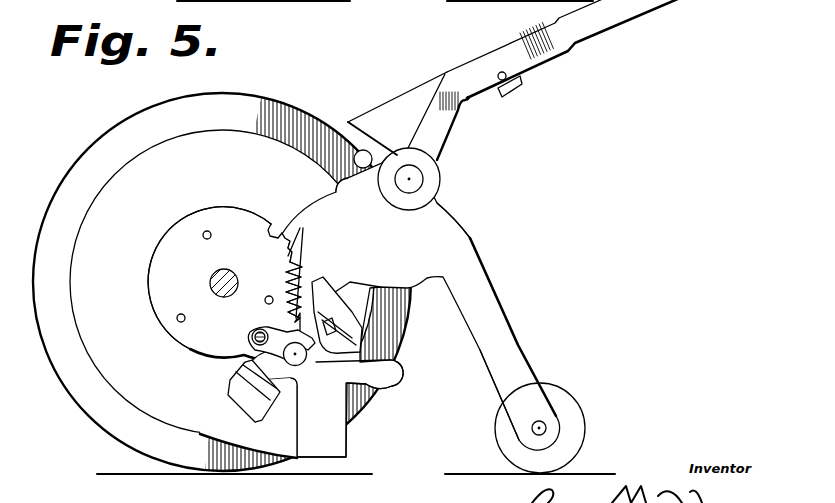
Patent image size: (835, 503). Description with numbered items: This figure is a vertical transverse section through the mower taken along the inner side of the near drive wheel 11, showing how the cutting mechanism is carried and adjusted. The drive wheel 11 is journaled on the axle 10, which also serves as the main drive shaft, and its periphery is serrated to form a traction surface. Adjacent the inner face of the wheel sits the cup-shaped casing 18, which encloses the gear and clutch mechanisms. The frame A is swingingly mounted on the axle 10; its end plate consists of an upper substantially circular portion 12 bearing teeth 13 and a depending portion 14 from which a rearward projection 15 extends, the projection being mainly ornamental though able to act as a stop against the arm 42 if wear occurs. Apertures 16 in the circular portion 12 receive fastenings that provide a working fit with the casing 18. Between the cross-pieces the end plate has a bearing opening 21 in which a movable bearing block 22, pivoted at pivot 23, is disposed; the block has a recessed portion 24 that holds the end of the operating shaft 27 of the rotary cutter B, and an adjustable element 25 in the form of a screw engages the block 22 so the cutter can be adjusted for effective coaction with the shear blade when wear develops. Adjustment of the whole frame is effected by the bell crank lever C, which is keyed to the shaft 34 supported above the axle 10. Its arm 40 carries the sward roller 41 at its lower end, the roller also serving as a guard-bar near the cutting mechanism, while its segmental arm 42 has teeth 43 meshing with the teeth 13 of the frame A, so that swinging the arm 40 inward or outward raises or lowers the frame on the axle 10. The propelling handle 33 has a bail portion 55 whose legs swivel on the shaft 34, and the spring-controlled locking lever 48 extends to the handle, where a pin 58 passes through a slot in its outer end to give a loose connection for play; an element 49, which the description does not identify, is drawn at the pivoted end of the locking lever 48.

The axle 10 is at (229, 275).
The drive wheel 11 is at (288, 107).
The upper substantially circular portion 12 is at (237, 215).
The teeth 13 is at (268, 229).
The depending portion 14 is at (330, 433).
The rearward projection 15 is at (393, 376).
The apertures 16 is at (204, 239).
The cup-shaped casing 18 is at (135, 160).
The bearing opening 21 is at (305, 315).
The movable bearing block 22 is at (283, 332).
The pivot 23 is at (253, 337).
The recessed portion 24 is at (306, 275).
The adjustable element 25 is at (343, 284).
The operating shaft 27 is at (297, 360).
The propelling handle 33 is at (622, 12).
The shaft 34 is at (410, 179).
The arm 40 is at (516, 345).
The sward roller 41 is at (573, 410).
The arm 42 is at (404, 303).
The teeth 43 is at (312, 233).
The locking lever 48 is at (418, 93).
The pin 49 is at (363, 150).
The bail portion 55 is at (437, 132).
The pin 58 is at (523, 80).
The frame A is at (160, 352).
The rotary cutter B is at (245, 400).
The bell crank lever C is at (468, 232).